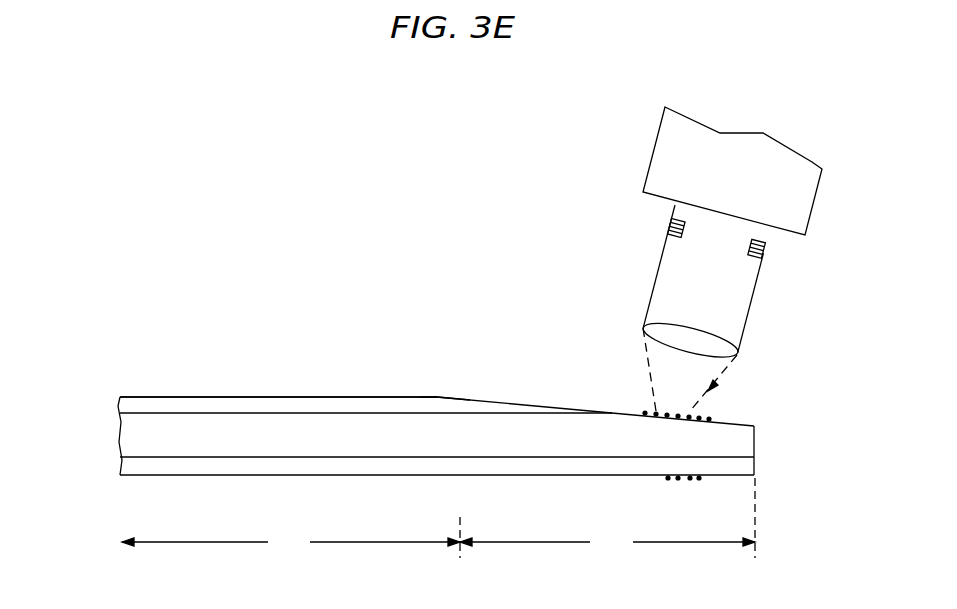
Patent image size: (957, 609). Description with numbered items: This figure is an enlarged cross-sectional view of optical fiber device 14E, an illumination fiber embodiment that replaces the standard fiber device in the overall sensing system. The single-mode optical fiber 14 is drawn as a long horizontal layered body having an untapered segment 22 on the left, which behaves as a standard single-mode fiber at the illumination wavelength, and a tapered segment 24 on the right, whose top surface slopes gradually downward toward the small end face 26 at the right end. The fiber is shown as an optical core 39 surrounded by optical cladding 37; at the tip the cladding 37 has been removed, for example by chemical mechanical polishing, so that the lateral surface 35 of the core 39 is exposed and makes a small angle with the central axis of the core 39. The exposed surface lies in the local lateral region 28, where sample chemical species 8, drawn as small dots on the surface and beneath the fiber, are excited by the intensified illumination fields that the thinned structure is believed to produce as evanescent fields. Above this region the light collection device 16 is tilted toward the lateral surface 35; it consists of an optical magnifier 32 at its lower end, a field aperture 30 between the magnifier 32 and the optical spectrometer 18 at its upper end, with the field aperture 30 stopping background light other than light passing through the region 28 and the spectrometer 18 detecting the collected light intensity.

The chemical species 8 is at (642, 410).
The single-mode optical fiber 14 is at (98, 403).
The optical fiber device 14E is at (313, 373).
The light collection device 16 is at (658, 279).
The optical spectrometer 18 is at (750, 183).
The untapered segment 22 is at (291, 537).
The tapered segment 24 is at (607, 518).
The end face 26 is at (756, 438).
The local lateral region 28 is at (716, 383).
The field aperture 30 is at (751, 248).
The optical magnifier 32 is at (700, 338).
The lateral surface 35 is at (733, 423).
The optical cladding 37 is at (432, 398).
The optical core 39 is at (502, 450).